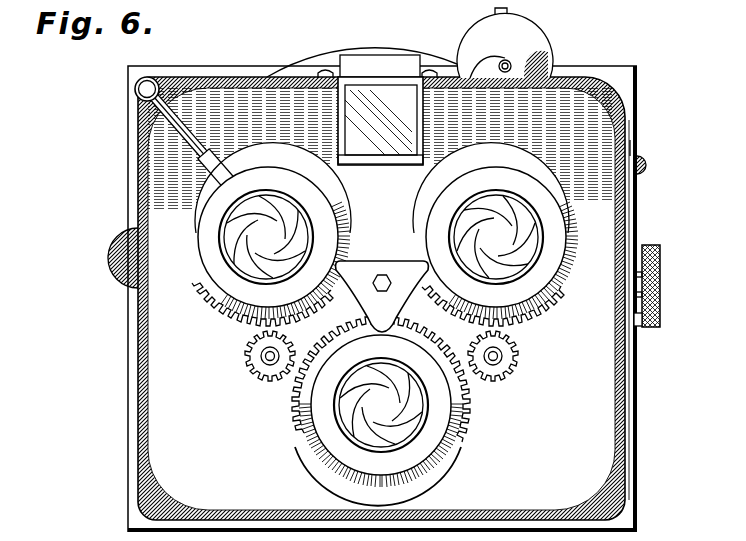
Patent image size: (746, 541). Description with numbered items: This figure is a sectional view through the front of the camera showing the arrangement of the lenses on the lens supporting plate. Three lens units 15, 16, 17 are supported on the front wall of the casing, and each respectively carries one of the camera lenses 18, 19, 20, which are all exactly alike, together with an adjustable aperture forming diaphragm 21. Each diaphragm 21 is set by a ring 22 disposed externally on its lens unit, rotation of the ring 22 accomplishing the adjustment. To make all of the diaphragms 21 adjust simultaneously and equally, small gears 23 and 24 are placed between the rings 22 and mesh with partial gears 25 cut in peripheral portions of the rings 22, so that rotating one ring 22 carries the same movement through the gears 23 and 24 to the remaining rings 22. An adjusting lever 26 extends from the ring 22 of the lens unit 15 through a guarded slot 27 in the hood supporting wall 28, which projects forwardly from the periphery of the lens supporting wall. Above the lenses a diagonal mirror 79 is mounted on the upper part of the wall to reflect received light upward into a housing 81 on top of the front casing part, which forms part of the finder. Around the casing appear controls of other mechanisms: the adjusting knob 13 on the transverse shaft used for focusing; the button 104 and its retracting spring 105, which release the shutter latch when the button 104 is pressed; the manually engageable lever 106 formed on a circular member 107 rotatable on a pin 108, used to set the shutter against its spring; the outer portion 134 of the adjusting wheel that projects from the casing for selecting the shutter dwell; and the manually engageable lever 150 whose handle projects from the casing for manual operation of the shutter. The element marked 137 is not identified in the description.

The adjusting knob 13 is at (660, 290).
The lens unit 15 is at (348, 213).
The lens unit 16 is at (556, 167).
The lens unit 17 is at (301, 455).
The camera lens 18 is at (276, 195).
The camera lens 19 is at (525, 213).
The camera lens 20 is at (417, 417).
The diaphragm 21 is at (258, 260).
The ring 22 is at (506, 158).
The small gear 23 is at (246, 364).
The small gear 24 is at (522, 357).
The partial gear 25 is at (322, 303).
The adjusting lever 26 is at (163, 133).
The guarded slot 27 is at (152, 119).
The hood supporting wall 28 is at (133, 177).
The diagonal mirror 79 is at (386, 150).
The housing 81 is at (375, 63).
The button 104 is at (646, 165).
The retracting spring 105 is at (632, 147).
The manually engageable lever 106 is at (496, 11).
The circular member 107 is at (545, 35).
The pin 108 is at (505, 60).
The outer portion 134 is at (128, 258).
The frame 137 is at (628, 407).
The manually engageable lever 150 is at (645, 322).